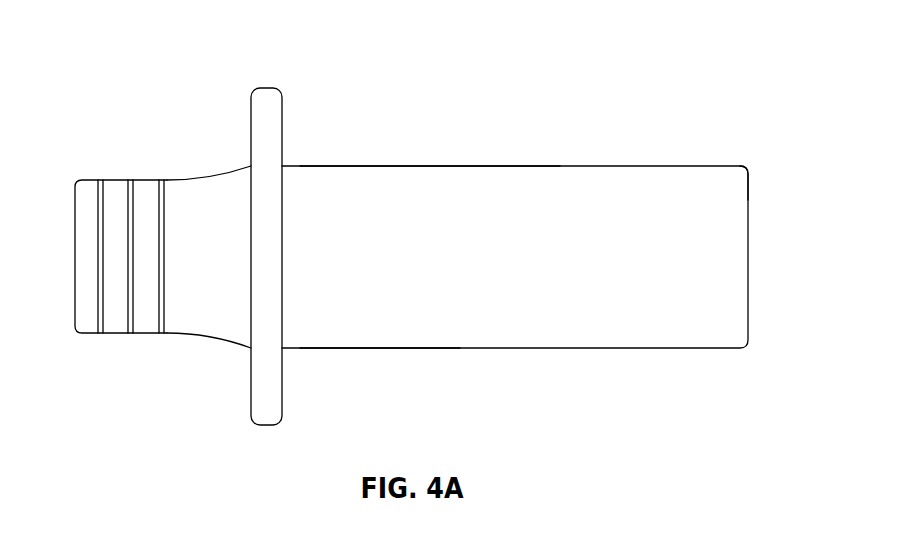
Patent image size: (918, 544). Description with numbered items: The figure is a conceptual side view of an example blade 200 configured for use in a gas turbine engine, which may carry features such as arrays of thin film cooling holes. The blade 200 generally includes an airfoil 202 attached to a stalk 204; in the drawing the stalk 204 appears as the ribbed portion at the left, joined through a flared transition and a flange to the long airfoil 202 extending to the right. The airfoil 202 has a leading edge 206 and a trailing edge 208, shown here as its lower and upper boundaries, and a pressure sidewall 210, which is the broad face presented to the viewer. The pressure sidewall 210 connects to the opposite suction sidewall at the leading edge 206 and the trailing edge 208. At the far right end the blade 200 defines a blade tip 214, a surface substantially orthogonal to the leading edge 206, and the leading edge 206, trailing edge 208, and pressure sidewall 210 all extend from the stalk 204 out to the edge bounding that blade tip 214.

The blade 200 is at (137, 66).
The airfoil 202 is at (468, 342).
The stalk 204 is at (177, 333).
The leading edge 206 is at (377, 348).
The trailing edge 208 is at (433, 166).
The pressure sidewall 210 is at (521, 272).
The blade tip 214 is at (760, 181).